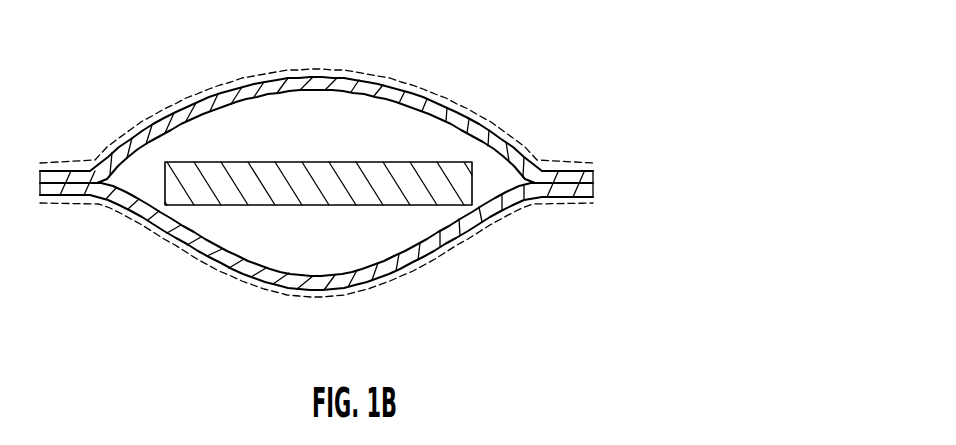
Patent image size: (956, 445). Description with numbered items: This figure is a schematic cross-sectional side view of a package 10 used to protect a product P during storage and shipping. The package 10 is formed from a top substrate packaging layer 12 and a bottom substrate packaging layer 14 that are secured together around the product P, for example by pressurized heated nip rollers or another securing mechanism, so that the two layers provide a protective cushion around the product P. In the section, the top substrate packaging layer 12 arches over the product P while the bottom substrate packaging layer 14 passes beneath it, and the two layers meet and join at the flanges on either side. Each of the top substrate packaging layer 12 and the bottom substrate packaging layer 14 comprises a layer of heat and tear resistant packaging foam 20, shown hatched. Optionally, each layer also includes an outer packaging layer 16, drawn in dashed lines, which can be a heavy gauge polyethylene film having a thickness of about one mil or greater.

The package 10 is at (132, 63).
The top substrate packaging layer 12 is at (270, 63).
The bottom substrate packaging layer 14 is at (235, 293).
The outer packaging layer 16 is at (418, 90).
The heat and tear resistant packaging foam 20 is at (330, 85).
The product P is at (187, 193).